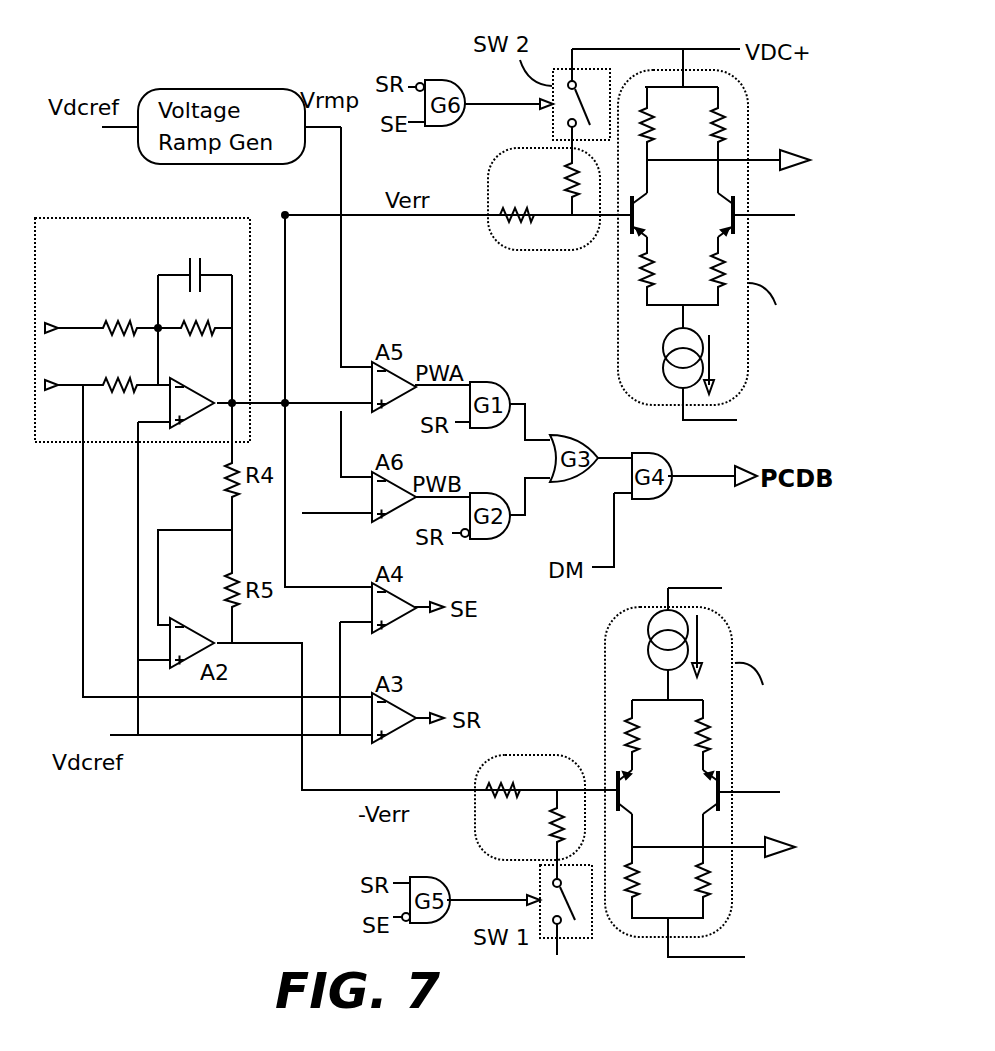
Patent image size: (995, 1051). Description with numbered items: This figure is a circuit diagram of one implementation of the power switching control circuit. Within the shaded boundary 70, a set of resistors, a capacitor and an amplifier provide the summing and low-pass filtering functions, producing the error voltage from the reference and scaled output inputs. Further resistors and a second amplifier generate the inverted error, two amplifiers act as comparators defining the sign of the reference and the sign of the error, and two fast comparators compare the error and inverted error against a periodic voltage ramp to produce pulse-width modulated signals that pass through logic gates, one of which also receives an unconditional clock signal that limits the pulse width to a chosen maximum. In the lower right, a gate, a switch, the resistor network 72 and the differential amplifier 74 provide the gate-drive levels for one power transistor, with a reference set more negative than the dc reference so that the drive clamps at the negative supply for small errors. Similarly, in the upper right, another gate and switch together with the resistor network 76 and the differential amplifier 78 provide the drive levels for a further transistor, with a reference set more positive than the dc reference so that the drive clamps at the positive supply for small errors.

The shaded boundary 70 is at (117, 218).
The resistor network 72 is at (542, 770).
The differential amplifier 74 is at (603, 712).
The resistor network 76 is at (506, 240).
The differential amplifier 78 is at (618, 268).